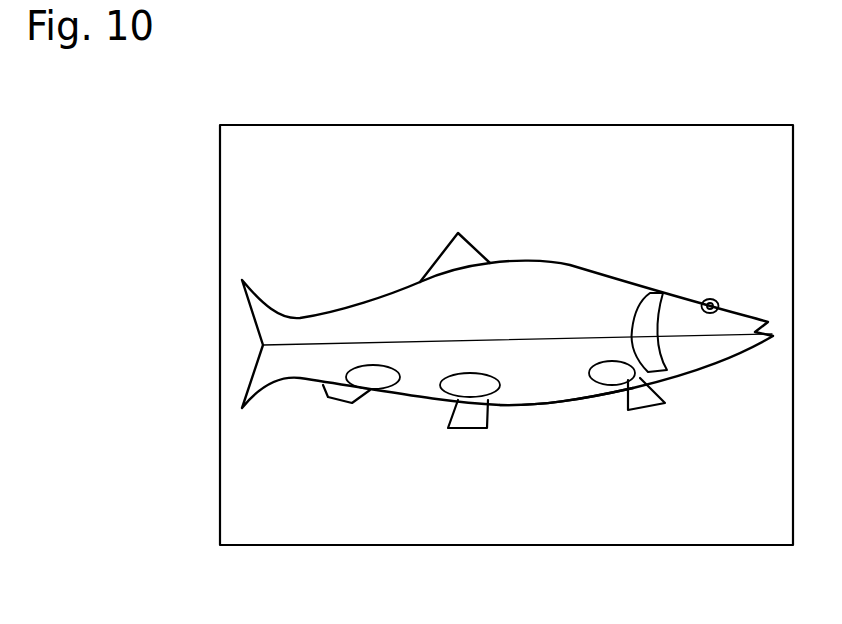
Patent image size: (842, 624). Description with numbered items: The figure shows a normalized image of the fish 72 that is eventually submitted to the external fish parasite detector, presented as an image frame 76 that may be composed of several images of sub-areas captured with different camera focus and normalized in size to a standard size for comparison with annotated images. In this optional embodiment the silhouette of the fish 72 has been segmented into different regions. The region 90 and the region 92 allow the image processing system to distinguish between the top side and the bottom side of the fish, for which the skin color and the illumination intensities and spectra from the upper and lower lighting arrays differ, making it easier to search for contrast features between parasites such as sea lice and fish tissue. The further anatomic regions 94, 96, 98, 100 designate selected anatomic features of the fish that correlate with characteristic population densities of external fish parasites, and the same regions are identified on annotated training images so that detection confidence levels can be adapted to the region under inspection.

The fish 72 is at (583, 290).
The display image frame 76 is at (633, 546).
The region 90 is at (408, 300).
The region 92 is at (543, 388).
The anatomic region 94 is at (648, 313).
The anatomic region 96 is at (382, 378).
The anatomic region 98 is at (470, 388).
The anatomic region 100 is at (610, 376).